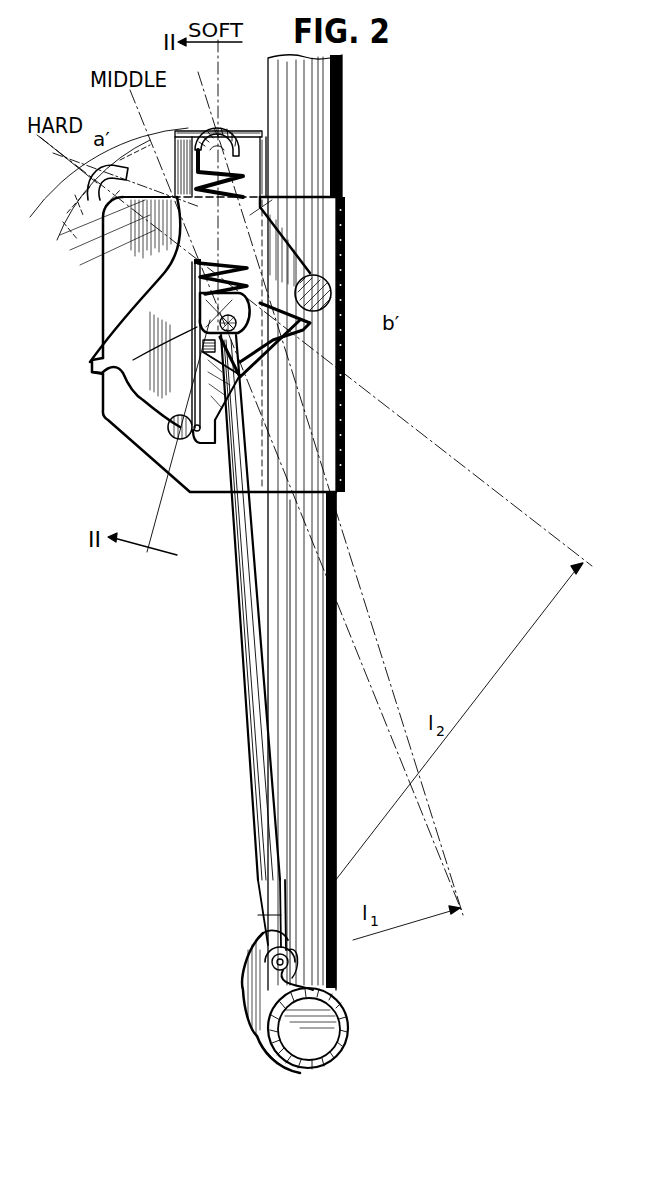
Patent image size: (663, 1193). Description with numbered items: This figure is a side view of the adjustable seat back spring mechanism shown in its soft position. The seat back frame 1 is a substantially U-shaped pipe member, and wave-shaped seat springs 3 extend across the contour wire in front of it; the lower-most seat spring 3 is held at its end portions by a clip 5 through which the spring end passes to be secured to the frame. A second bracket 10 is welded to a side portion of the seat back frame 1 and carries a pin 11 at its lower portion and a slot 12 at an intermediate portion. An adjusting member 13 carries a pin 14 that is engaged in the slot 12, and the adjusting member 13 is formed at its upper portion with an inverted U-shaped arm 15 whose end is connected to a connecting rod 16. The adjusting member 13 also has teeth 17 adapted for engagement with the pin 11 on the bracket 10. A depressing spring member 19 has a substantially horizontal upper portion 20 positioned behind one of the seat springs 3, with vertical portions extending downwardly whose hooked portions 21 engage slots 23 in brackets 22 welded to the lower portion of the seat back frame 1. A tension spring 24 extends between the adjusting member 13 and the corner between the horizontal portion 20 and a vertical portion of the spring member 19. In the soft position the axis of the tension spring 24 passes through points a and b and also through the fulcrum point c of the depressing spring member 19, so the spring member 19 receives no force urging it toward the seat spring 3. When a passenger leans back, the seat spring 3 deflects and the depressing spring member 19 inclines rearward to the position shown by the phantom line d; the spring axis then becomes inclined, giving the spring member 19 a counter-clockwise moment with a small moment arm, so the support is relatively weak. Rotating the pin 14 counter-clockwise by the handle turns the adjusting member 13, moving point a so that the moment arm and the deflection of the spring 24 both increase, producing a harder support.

The seat back frame 1 is at (310, 613).
The seat spring 3 is at (133, 420).
The clip 5 is at (178, 133).
The second bracket 10 is at (113, 307).
The pin 11 is at (180, 432).
The slot 12 is at (345, 265).
The adjusting member 13 is at (130, 347).
The pin 14 is at (92, 362).
The arm 15 is at (187, 133).
The connecting rod 16 is at (333, 294).
The teeth 17 is at (190, 407).
The depressing spring member 19 is at (248, 643).
The horizontal upper portion 20 is at (203, 447).
The hooked portion 21 is at (270, 925).
The bracket 22 is at (263, 1005).
The slot 23 is at (280, 968).
The tension spring 24 is at (243, 173).
The point a is at (222, 128).
The point b is at (267, 340).
The fulcrum point c is at (268, 960).
The phantom line d is at (278, 542).
The pivot pin of latch e is at (197, 292).